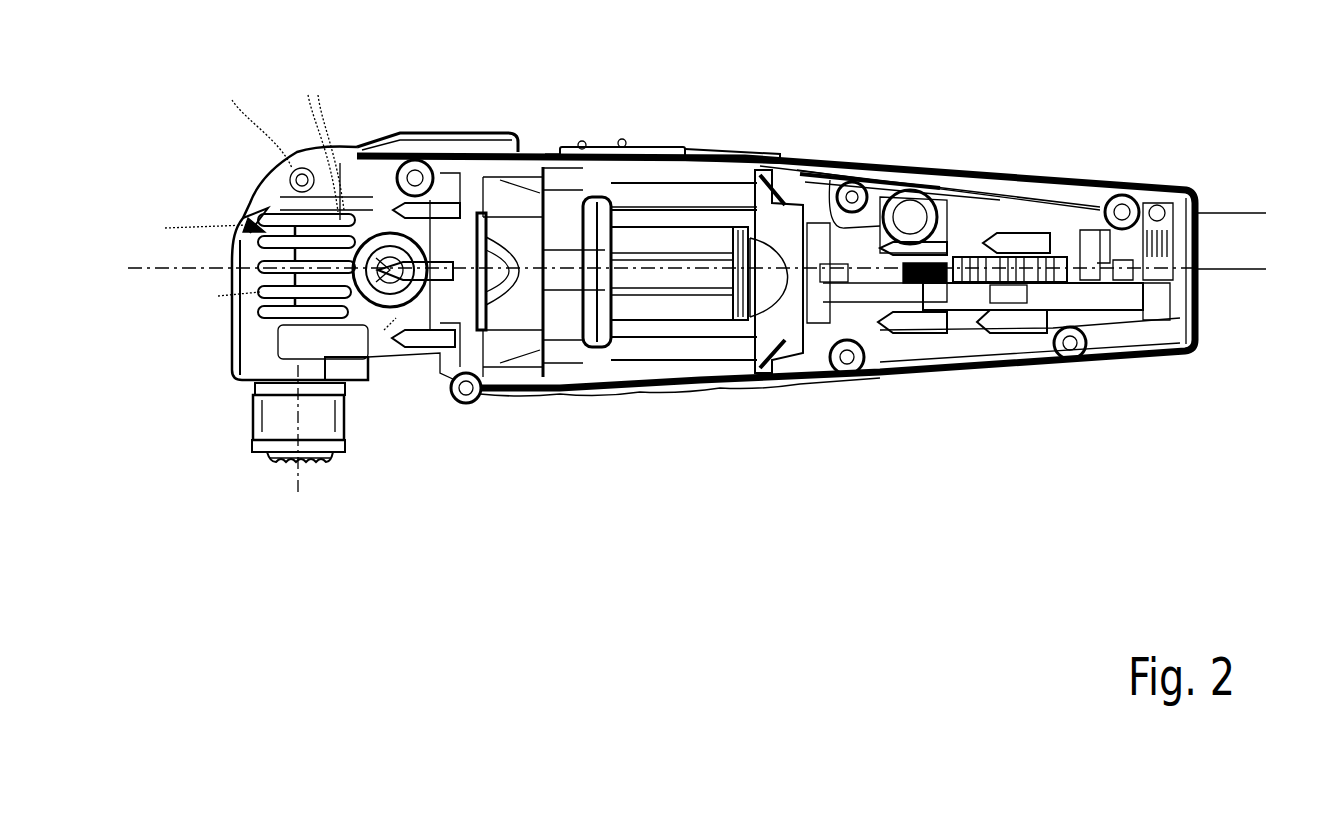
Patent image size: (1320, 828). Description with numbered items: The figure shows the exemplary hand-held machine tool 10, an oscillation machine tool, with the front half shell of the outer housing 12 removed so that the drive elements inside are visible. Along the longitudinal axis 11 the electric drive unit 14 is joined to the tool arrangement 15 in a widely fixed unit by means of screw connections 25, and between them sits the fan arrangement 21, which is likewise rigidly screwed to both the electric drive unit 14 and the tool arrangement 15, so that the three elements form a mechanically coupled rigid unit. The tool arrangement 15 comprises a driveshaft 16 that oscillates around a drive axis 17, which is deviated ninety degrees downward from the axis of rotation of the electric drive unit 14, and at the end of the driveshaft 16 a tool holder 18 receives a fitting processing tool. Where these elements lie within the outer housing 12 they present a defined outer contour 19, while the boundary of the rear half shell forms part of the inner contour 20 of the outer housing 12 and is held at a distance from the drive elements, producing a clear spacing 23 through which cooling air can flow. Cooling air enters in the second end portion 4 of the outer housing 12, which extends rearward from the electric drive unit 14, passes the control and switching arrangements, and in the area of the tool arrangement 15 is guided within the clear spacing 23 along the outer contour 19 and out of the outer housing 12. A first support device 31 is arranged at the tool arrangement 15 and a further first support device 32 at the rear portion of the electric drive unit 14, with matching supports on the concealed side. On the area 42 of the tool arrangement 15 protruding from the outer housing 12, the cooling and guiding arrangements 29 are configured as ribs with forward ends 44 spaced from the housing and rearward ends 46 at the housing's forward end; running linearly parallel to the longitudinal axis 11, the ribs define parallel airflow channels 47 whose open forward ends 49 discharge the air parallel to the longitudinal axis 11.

The second end portion 4 is at (1145, 152).
The hand-held machine tool 10 is at (882, 116).
The longitudinal axis 11 is at (188, 270).
The outer housing 12 is at (1052, 182).
The electric drive unit 14 is at (696, 358).
The tool arrangement 15 is at (246, 340).
The driveshaft 16 is at (265, 414).
The drive axis 17 is at (295, 478).
The tool holder 18 is at (335, 462).
The outer contour 19 is at (600, 390).
The inner contour 20 is at (789, 166).
The fan arrangement 21 is at (522, 358).
The clear spacing 23 is at (628, 148).
The screw connections 25 is at (458, 150).
The cooling and guiding arrangements 29 is at (250, 210).
The first support device 31 is at (373, 252).
The first support device 32 is at (932, 172).
The area of the tool arrangement protruding from the outer housing 42 is at (242, 117).
The forward ends of the ribs 44 is at (221, 298).
The rearward ends of the ribs 46 is at (375, 337).
The airflow channels 47 is at (315, 139).
The open forward ends 49 is at (189, 218).